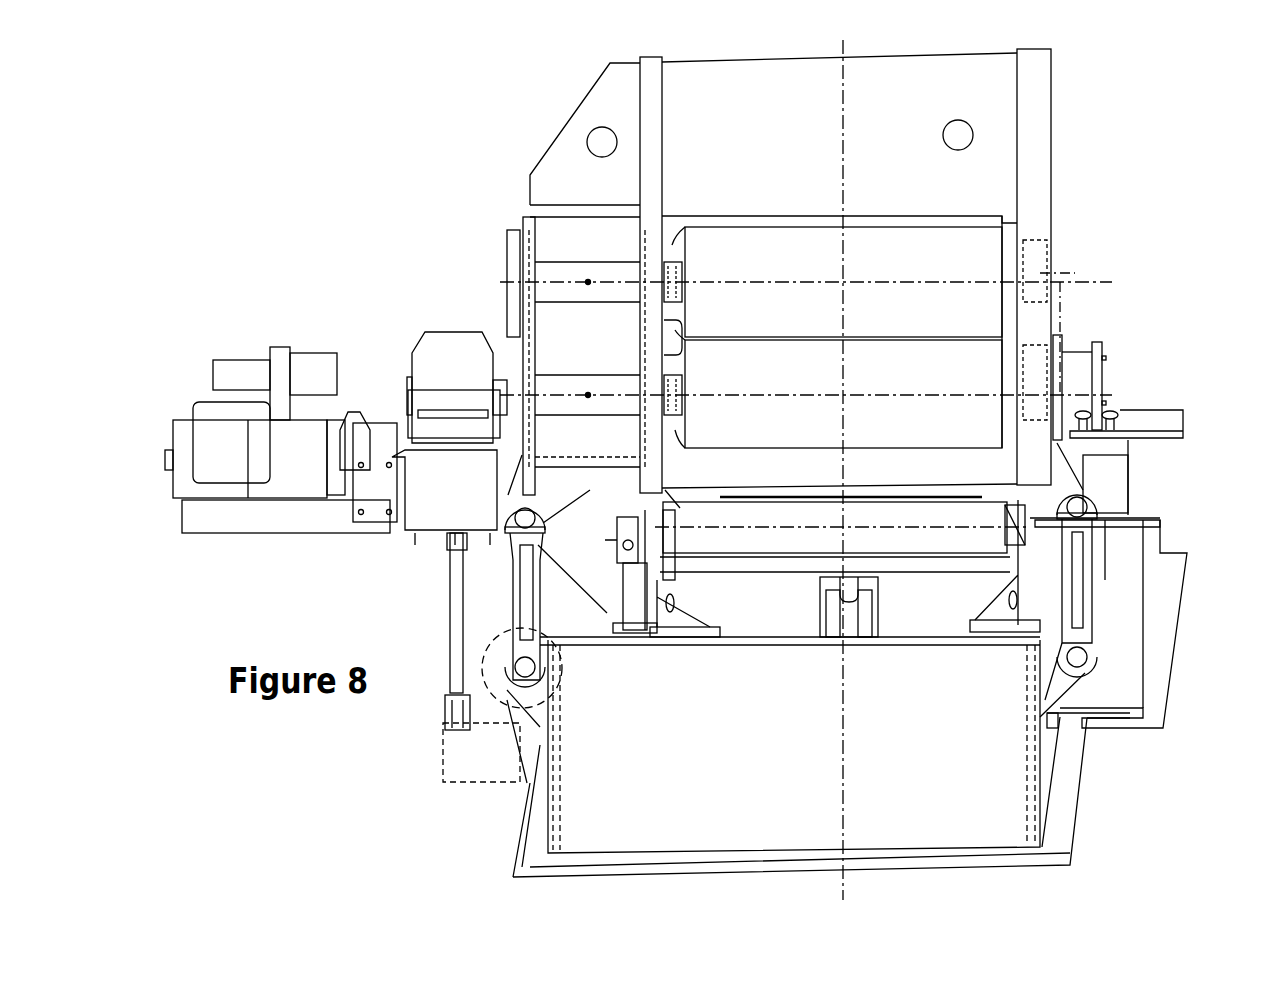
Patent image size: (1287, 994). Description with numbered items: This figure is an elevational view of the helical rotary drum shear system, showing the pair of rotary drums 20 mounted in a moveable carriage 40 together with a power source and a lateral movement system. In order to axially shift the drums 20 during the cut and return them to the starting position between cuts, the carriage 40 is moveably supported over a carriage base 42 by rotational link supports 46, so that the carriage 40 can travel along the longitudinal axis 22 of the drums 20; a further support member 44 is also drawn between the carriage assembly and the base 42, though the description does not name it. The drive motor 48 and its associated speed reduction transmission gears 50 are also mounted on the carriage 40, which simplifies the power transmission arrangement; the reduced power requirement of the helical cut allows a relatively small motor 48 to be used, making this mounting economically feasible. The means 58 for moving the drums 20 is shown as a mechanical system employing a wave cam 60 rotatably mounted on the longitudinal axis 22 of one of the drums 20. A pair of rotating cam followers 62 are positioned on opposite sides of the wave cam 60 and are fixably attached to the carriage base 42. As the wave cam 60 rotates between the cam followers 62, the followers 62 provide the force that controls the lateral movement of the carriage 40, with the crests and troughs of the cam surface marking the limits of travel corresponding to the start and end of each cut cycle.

The moveable carriage 40 is at (549, 138).
The drums 20 is at (963, 255).
The longitudinal axis 22 is at (1067, 273).
The carriage base 42 is at (510, 747).
The connecting rod 44 is at (448, 607).
The rotational link supports 46 is at (525, 588).
The drive motor 48 is at (263, 495).
The speed reduction transmission gears 50 is at (420, 343).
The means for moving the drums 58 is at (1118, 343).
The wave cam 60 is at (1097, 340).
The cam followers 62 is at (1118, 420).